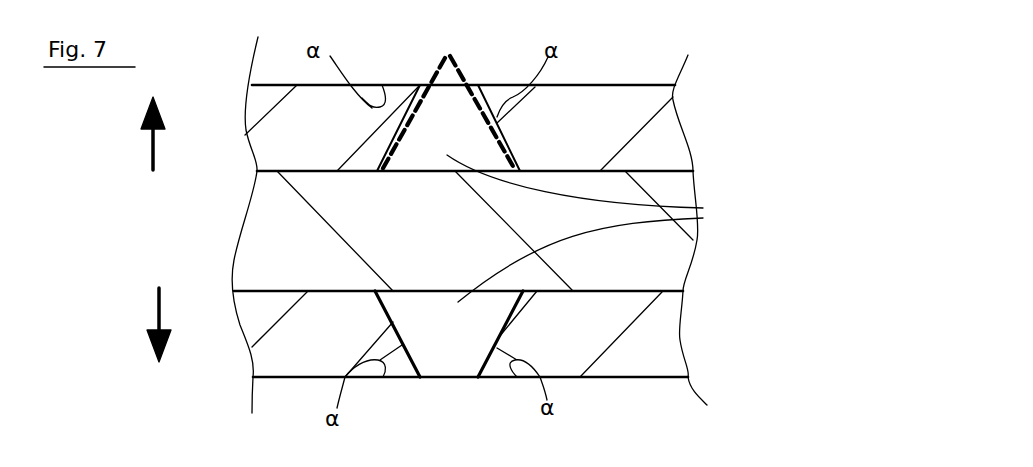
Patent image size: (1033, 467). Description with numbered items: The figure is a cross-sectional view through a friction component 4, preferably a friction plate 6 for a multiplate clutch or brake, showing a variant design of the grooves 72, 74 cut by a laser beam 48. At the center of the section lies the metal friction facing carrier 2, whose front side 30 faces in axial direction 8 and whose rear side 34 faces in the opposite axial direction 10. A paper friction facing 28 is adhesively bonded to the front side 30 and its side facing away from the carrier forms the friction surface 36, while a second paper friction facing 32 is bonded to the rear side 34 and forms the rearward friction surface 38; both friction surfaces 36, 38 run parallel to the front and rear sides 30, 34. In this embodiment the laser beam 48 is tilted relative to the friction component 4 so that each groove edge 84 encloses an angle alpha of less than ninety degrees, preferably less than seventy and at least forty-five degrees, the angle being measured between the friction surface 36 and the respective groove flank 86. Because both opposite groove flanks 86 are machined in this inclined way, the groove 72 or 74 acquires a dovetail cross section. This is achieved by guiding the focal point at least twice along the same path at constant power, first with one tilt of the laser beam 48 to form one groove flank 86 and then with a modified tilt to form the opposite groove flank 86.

The friction facing carrier 2 is at (665, 257).
The friction component 4 is at (746, 99).
The friction plate 6 is at (698, 140).
The axial direction 8 is at (150, 145).
The axial direction 10 is at (157, 308).
The paper friction facing 28 is at (662, 132).
The front side 30 is at (588, 157).
The paper friction facing 32 is at (662, 320).
The rear side 34 is at (620, 293).
The friction surface 36 is at (567, 72).
The friction surface 38 is at (594, 388).
The laser beam 48 is at (430, 78).
The first groove 72 is at (610, 228).
The second groove 74 is at (610, 228).
The groove edge 84 is at (420, 85).
The groove flank 86 is at (508, 146).